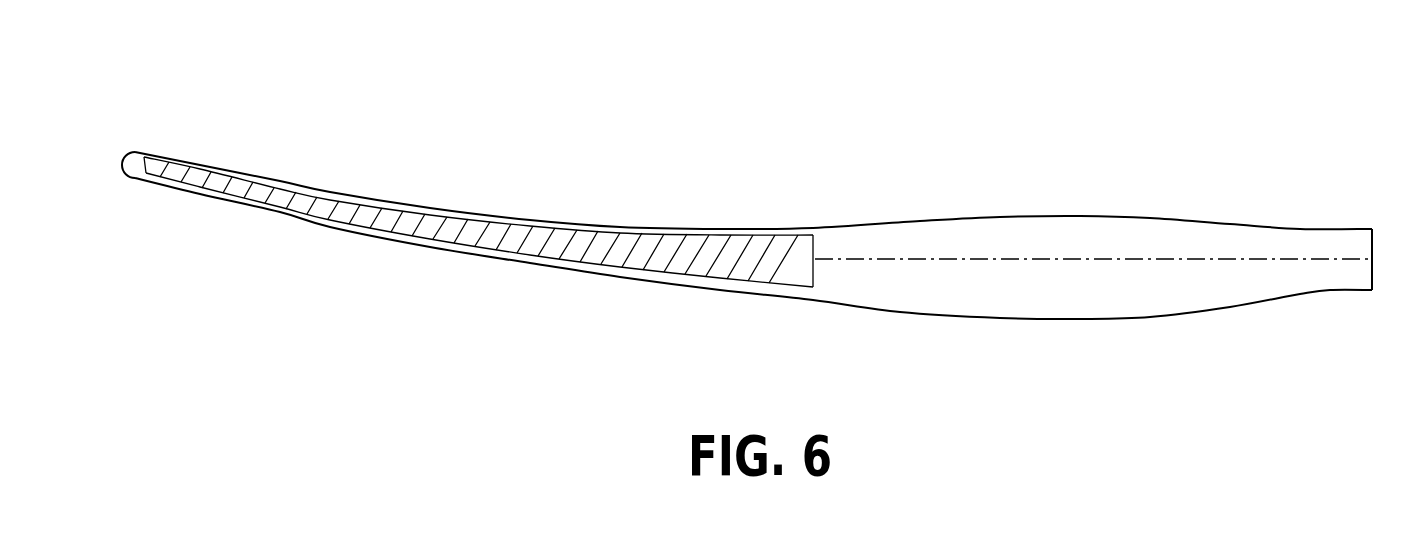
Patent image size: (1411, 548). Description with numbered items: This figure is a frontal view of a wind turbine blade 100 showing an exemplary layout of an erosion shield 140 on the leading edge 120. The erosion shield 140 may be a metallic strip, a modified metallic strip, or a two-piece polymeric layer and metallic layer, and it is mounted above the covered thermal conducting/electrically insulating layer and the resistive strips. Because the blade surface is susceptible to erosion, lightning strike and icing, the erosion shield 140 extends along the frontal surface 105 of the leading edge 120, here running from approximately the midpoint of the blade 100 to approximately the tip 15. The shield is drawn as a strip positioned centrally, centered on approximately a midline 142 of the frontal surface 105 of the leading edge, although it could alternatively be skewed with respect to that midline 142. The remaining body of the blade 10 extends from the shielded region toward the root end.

The blade 100 is at (712, 229).
The shaft body 10 is at (753, 268).
The tip 15 is at (125, 165).
The frontal surface 105 is at (887, 245).
The leading edge 120 is at (938, 322).
The erosion shield 140 is at (552, 232).
The midline 142 is at (1023, 257).